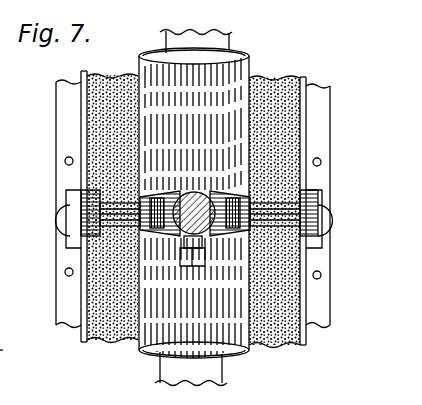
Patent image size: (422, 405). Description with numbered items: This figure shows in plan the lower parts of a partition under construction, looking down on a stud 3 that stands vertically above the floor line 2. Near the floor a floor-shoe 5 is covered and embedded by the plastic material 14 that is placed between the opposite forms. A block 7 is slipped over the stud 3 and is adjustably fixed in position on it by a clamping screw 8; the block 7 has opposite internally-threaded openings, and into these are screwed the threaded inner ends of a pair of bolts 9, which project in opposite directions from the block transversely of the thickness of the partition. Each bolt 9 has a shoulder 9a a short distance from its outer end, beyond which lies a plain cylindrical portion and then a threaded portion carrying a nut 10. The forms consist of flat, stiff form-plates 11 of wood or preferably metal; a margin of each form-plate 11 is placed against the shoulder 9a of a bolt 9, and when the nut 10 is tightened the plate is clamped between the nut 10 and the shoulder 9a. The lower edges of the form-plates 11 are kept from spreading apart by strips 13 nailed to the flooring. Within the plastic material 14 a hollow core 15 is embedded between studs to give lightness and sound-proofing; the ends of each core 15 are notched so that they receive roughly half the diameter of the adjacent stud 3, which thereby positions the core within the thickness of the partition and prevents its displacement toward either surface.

The floor line 2 is at (0, 380).
The stud 3 is at (190, 190).
The floor-shoe 5 is at (231, 34).
The block 7 is at (200, 192).
The clamping screw 8 is at (185, 260).
The bolt 9 is at (98, 250).
The shoulder 9a is at (84, 196).
The nut 10 is at (66, 238).
The form-plate 11 is at (81, 108).
The strip 13 is at (66, 328).
The plastic material 14 is at (264, 346).
The core 15 is at (145, 52).